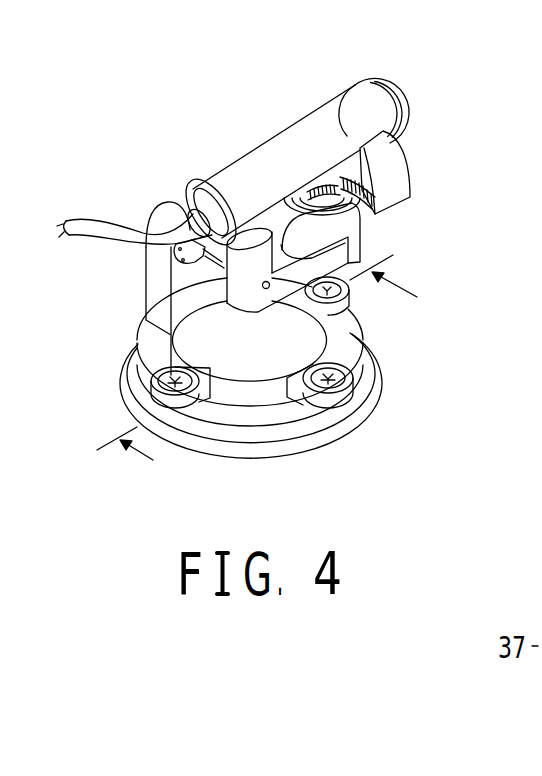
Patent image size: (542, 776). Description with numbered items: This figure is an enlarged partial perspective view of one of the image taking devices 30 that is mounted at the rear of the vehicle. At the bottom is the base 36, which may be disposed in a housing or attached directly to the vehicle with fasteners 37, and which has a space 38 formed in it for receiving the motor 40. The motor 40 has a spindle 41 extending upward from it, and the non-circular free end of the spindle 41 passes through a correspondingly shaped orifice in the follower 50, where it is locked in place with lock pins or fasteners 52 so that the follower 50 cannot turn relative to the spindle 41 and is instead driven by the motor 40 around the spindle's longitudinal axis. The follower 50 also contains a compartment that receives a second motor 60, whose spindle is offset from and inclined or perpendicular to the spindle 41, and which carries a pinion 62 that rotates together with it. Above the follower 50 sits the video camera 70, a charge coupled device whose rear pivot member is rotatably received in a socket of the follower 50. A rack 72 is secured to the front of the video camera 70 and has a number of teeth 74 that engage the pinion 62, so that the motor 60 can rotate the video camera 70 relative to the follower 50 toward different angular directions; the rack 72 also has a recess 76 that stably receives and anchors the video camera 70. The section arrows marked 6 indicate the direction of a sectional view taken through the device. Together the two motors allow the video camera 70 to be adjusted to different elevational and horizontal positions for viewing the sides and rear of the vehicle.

The image taking device 30 is at (147, 180).
The base 36 is at (260, 454).
The fasteners 37 is at (330, 386).
The space 38 is at (177, 253).
The motor 40 is at (175, 258).
The spindle 41 is at (207, 273).
The follower 50 is at (338, 270).
The lock pins or fasteners 52 is at (266, 290).
The motor 60 is at (365, 214).
The pinion 62 is at (352, 208).
The video camera 70 is at (260, 155).
The rack 72 is at (398, 162).
The teeth 74 is at (367, 183).
The recess 76 is at (340, 150).
The section line 6 is at (267, 378).